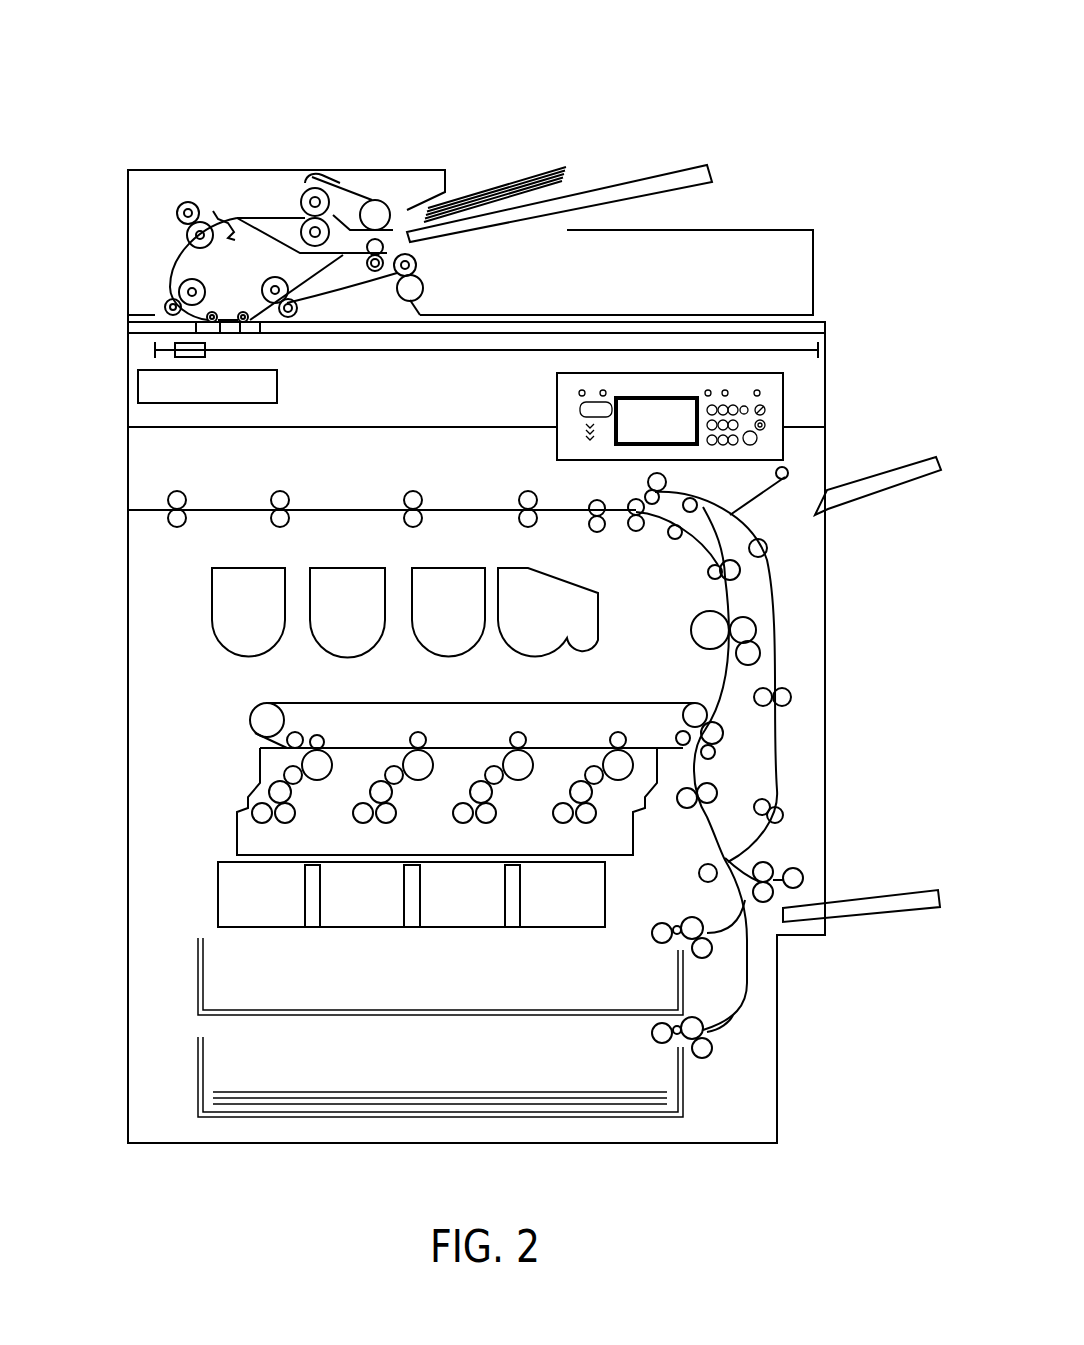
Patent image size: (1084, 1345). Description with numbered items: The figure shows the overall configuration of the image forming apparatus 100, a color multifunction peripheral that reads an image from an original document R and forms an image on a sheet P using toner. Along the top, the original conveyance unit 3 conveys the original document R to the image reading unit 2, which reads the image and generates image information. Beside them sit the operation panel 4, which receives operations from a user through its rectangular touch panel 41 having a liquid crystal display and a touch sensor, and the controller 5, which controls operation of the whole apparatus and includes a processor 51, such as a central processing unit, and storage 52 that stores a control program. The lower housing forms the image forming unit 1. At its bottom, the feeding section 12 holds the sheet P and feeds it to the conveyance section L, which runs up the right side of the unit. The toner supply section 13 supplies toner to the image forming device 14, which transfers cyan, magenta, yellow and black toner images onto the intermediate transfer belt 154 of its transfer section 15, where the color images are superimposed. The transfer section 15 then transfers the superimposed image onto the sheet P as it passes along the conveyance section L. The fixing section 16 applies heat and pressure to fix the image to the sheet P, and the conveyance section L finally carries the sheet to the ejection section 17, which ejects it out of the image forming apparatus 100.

The image forming apparatus 100 is at (722, 95).
The image forming unit 1 is at (867, 581).
The image reading unit 2 is at (832, 362).
The original conveyance unit 3 is at (833, 279).
The operation panel 4 is at (785, 403).
The touch panel 41 is at (643, 397).
The controller 5 is at (278, 382).
The processor 51 is at (278, 382).
The storage 52 is at (277, 382).
The conveyance section L is at (333, 500).
The feeding section 12 is at (186, 1063).
The toner supply section 13 is at (182, 612).
The image forming device 14 is at (176, 826).
The transfer section 15 is at (232, 714).
The intermediate transfer belt 154 is at (413, 702).
The fixing section 16 is at (698, 606).
The ejection section 17 is at (156, 492).
The sheet P is at (312, 1105).
The original document R is at (545, 178).